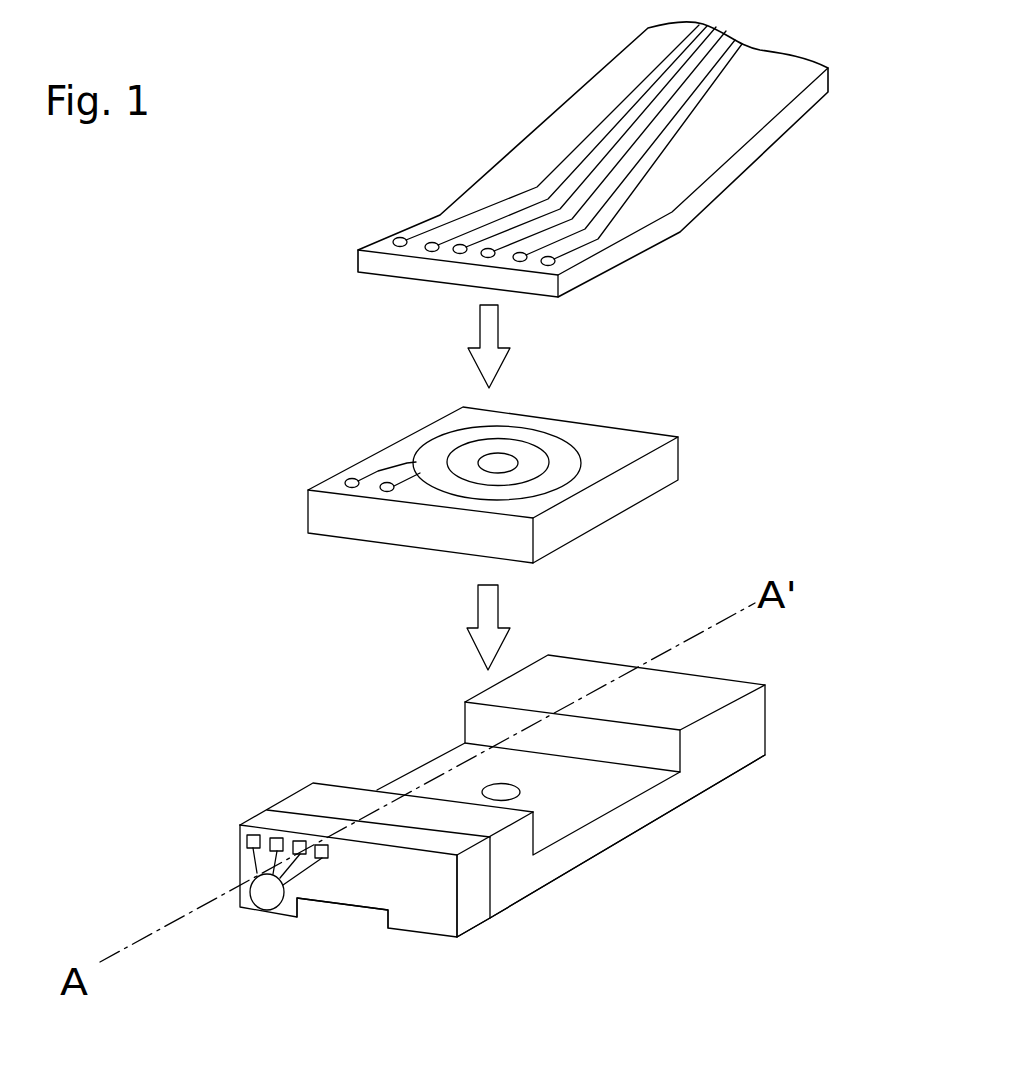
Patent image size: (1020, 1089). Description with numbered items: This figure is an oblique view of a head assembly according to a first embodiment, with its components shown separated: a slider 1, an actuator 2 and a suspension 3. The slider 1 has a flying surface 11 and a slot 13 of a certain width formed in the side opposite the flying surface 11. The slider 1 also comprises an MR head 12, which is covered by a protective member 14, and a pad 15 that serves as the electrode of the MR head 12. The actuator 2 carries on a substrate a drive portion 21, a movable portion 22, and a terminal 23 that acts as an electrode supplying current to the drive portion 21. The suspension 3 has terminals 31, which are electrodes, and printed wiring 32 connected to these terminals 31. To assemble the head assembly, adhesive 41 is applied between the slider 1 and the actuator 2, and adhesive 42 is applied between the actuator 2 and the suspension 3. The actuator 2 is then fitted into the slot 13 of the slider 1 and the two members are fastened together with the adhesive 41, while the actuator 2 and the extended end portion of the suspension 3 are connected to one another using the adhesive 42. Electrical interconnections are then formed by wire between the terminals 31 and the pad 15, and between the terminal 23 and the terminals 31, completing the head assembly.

The slider 1 is at (740, 733).
The actuator 2 is at (633, 488).
The suspension 3 is at (693, 162).
The flying surface 11 is at (417, 933).
The MR head 12 is at (263, 895).
The slot 13 is at (560, 805).
The protective member 14 is at (470, 907).
The pad 15 is at (240, 838).
The drive portion 21 is at (560, 468).
The movable portion 22 is at (530, 460).
The terminal 23 is at (352, 480).
The terminals 31 is at (395, 238).
The printed wiring 32 is at (603, 123).
The adhesive 41 is at (498, 788).
The adhesive 42 is at (502, 462).